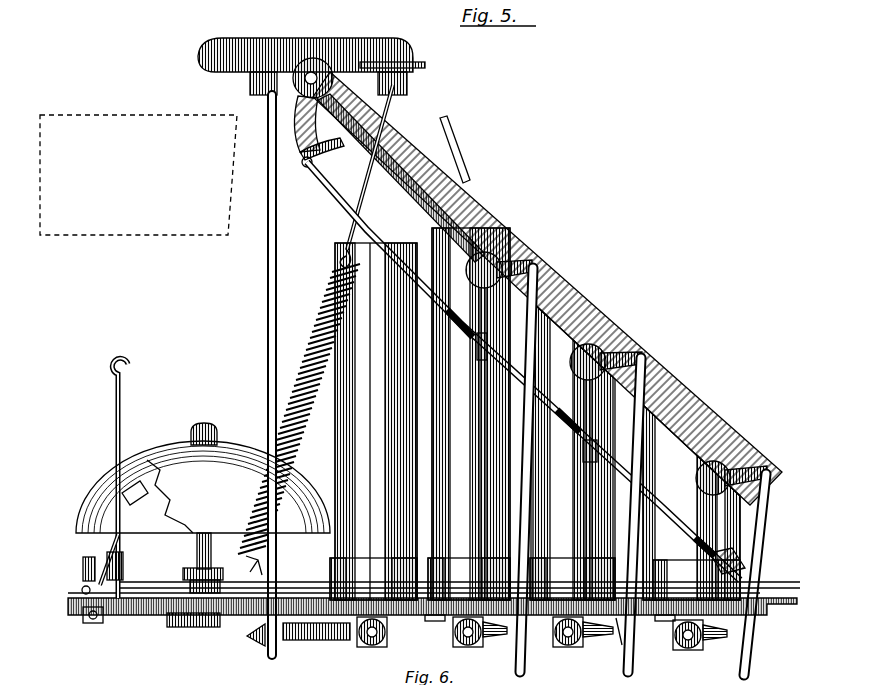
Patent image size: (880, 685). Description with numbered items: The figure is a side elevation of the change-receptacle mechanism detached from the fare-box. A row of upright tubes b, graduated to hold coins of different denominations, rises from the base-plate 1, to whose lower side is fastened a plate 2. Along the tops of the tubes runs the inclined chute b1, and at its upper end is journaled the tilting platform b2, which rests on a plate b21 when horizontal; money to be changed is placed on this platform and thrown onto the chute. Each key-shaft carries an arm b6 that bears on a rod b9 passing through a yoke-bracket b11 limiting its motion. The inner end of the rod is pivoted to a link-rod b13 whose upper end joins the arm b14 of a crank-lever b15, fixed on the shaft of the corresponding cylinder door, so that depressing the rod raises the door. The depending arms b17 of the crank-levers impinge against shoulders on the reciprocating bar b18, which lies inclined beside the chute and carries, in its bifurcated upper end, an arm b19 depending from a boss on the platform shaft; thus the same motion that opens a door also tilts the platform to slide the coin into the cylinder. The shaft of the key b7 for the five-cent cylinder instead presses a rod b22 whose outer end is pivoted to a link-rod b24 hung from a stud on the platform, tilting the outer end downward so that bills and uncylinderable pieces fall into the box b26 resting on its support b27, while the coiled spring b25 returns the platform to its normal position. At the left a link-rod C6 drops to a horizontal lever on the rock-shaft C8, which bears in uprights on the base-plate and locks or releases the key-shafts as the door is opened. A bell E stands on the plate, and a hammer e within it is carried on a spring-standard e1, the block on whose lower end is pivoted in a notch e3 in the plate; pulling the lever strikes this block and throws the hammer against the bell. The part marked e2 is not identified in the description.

The tilting platform b2 is at (305, 52).
The plate b21 is at (418, 68).
The arm b19 is at (306, 140).
The reciprocating bar b18 is at (337, 197).
The box b26 is at (138, 175).
The link-rod b24 is at (254, 375).
The coiled spring b25 is at (315, 330).
The chute b1 is at (594, 308).
The link-rod b13 is at (528, 470).
The arm b14 is at (540, 264).
The crank-lever b15 is at (630, 430).
The depending arm b17 is at (590, 444).
The upright tubes b is at (537, 414).
The support b27 is at (535, 579).
The rock-shaft C8 is at (308, 584).
The base-plate 1 is at (165, 604).
The plate 2 is at (435, 620).
The shaft of the key b7 is at (378, 648).
The arms b6 is at (510, 632).
The rod b9 is at (620, 645).
The yoke-bracket b11 is at (634, 666).
The rod b22 is at (268, 643).
The link-rod C6 is at (117, 417).
The bell E is at (203, 478).
The hammer e is at (140, 506).
The spring-standard e1 is at (105, 543).
The block e2 is at (86, 586).
The notch e3 is at (120, 564).